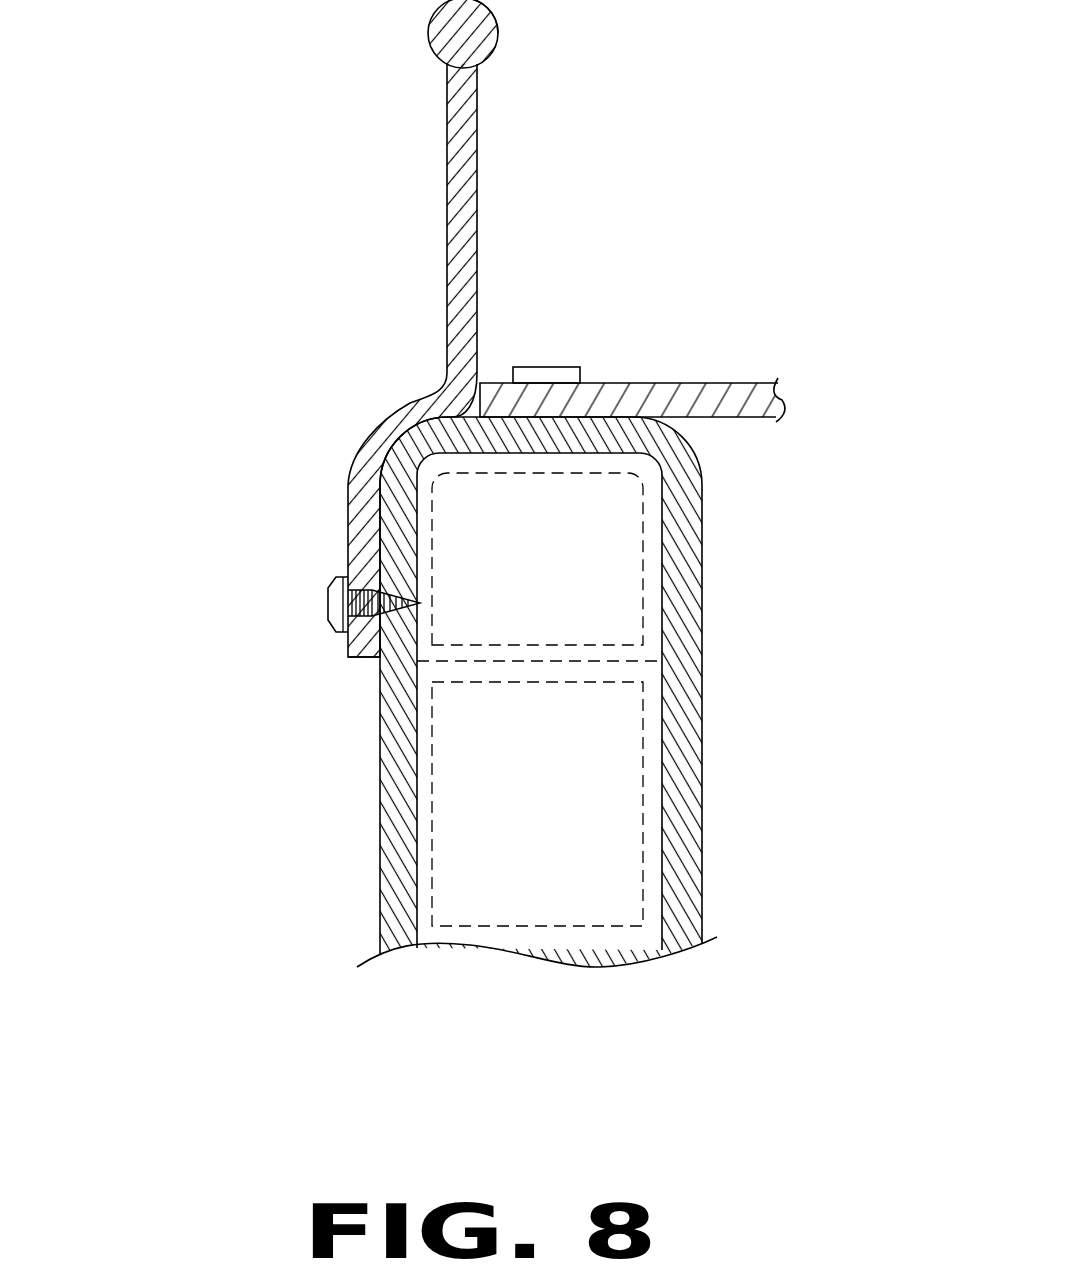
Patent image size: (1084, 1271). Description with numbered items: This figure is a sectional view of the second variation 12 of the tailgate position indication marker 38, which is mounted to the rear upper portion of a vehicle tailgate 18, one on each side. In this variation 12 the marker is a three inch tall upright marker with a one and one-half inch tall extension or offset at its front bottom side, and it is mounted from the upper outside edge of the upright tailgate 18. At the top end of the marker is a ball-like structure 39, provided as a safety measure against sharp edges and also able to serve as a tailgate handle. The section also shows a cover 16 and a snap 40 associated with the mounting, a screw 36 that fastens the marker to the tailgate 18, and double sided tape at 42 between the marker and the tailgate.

The second embodiment/variation 12 is at (363, 437).
The cover 16 is at (650, 385).
The tailgate 18 is at (702, 520).
The screw 36 is at (330, 590).
The tailgate position indication marker 38 is at (427, 42).
The ball-like structure 39 is at (500, 43).
The snap 40 is at (548, 367).
The double sided tape 42 is at (363, 667).